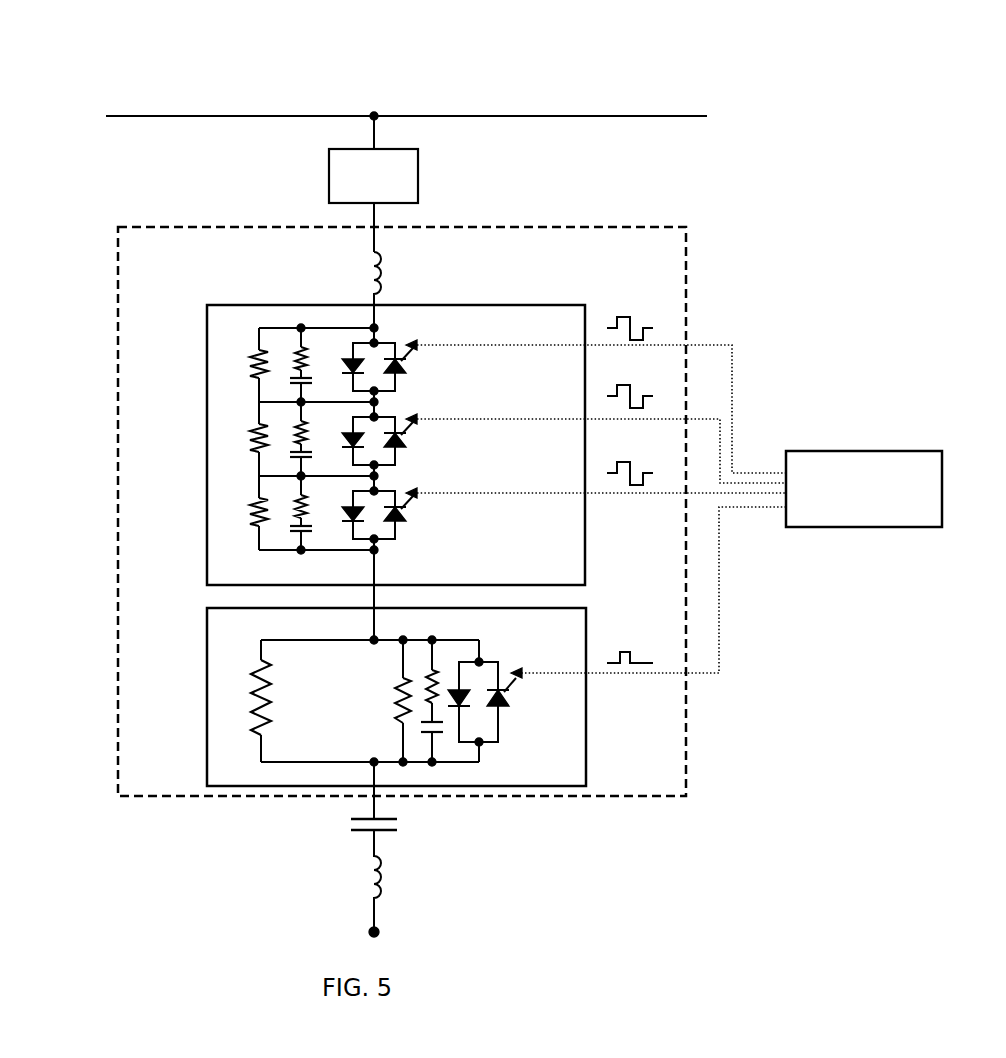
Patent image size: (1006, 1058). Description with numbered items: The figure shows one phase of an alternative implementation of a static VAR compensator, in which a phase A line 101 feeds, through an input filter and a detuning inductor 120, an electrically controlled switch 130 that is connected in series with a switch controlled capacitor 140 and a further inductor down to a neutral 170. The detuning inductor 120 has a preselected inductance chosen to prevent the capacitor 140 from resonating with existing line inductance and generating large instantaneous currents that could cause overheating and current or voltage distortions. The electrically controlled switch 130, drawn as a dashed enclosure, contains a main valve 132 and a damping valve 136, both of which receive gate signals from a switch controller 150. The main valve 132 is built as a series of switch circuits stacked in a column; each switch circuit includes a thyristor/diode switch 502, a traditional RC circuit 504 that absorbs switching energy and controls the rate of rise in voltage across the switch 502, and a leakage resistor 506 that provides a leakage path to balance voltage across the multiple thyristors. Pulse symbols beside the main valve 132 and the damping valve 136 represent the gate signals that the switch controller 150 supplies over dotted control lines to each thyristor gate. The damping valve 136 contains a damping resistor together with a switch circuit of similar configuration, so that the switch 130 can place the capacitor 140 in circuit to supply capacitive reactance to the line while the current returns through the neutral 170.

The phase A input line 101 is at (120, 116).
The detuning inductor 120 is at (420, 178).
The electrically controlled switch 130 is at (686, 258).
The main valve 132 is at (207, 445).
The damping valve 136 is at (207, 700).
The thyristor/diode switch 502 is at (386, 344).
The RC circuit 504 is at (306, 377).
The leakage resistor 506 is at (252, 363).
The switch controller 150 is at (942, 470).
The switch controlled capacitor 140 is at (380, 820).
The neutral 170 is at (379, 935).